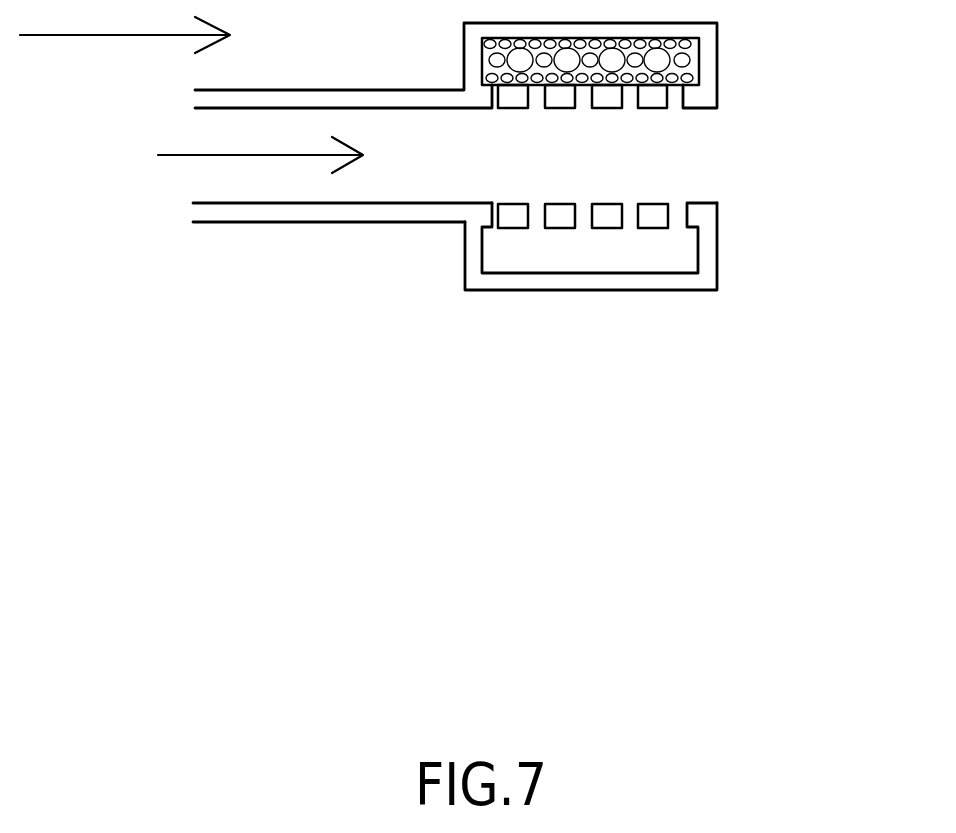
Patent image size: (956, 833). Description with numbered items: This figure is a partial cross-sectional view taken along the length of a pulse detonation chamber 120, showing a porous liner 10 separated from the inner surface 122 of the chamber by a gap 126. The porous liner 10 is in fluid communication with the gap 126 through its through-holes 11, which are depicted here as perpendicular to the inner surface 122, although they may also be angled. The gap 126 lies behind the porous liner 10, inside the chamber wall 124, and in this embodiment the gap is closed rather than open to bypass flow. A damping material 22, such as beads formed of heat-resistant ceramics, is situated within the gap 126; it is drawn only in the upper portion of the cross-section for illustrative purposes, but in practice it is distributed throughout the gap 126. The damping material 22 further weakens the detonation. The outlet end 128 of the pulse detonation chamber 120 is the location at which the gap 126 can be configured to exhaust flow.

The pulse detonation chamber 120 is at (427, 422).
The outlet end 128 is at (723, 27).
The damping material 22 is at (687, 63).
The through-holes 11 is at (627, 110).
The porous liner 10 is at (690, 211).
The gap 126 is at (675, 266).
The chamber wall 124 is at (267, 221).
The inner surface 122 is at (587, 290).